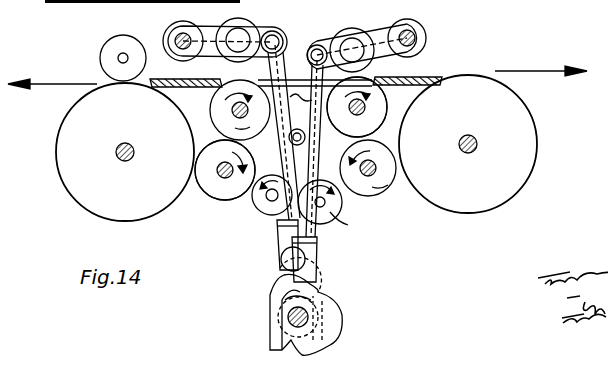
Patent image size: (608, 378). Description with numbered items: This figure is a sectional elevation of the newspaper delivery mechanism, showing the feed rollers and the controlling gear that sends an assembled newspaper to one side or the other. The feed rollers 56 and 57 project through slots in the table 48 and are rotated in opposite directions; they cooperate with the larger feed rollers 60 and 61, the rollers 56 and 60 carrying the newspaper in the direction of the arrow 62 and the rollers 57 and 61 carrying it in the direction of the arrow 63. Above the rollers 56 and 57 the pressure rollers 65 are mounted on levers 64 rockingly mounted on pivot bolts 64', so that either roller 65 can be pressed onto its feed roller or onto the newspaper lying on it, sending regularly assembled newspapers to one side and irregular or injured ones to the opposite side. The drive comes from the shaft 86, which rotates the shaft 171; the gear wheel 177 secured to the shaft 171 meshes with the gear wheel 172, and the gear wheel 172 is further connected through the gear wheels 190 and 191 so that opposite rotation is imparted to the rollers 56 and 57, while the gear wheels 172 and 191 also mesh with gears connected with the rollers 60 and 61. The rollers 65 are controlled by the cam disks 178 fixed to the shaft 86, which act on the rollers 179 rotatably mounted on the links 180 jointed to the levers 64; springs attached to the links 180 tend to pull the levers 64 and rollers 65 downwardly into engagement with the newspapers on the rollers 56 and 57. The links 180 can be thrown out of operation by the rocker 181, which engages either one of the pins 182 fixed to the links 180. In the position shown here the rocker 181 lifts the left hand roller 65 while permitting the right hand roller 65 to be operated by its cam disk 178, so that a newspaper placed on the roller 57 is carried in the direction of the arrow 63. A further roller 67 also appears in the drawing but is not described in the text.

The arrow 62 is at (38, 80).
The arrow 63 is at (548, 70).
The table 48 is at (165, 92).
The feed roller 56 is at (191, 117).
The feed roller 57 is at (383, 113).
The feed roller 60 is at (57, 172).
The feed roller 61 is at (538, 146).
The pivot bolt 64' is at (167, 33).
The lever 64 is at (292, 36).
The roller 65 is at (342, 37).
The roller 67 is at (410, 30).
The pin 182 is at (266, 97).
The rocker 181 is at (289, 138).
The gear wheel 191 is at (224, 190).
The gear wheel 190 is at (259, 211).
The link 180 is at (285, 208).
The roller 179 is at (282, 279).
The shaft 86 is at (285, 321).
The cam disk 178 is at (338, 316).
The gear wheel 177 is at (346, 225).
The shaft 171 is at (335, 217).
The gear wheel 172 is at (375, 189).